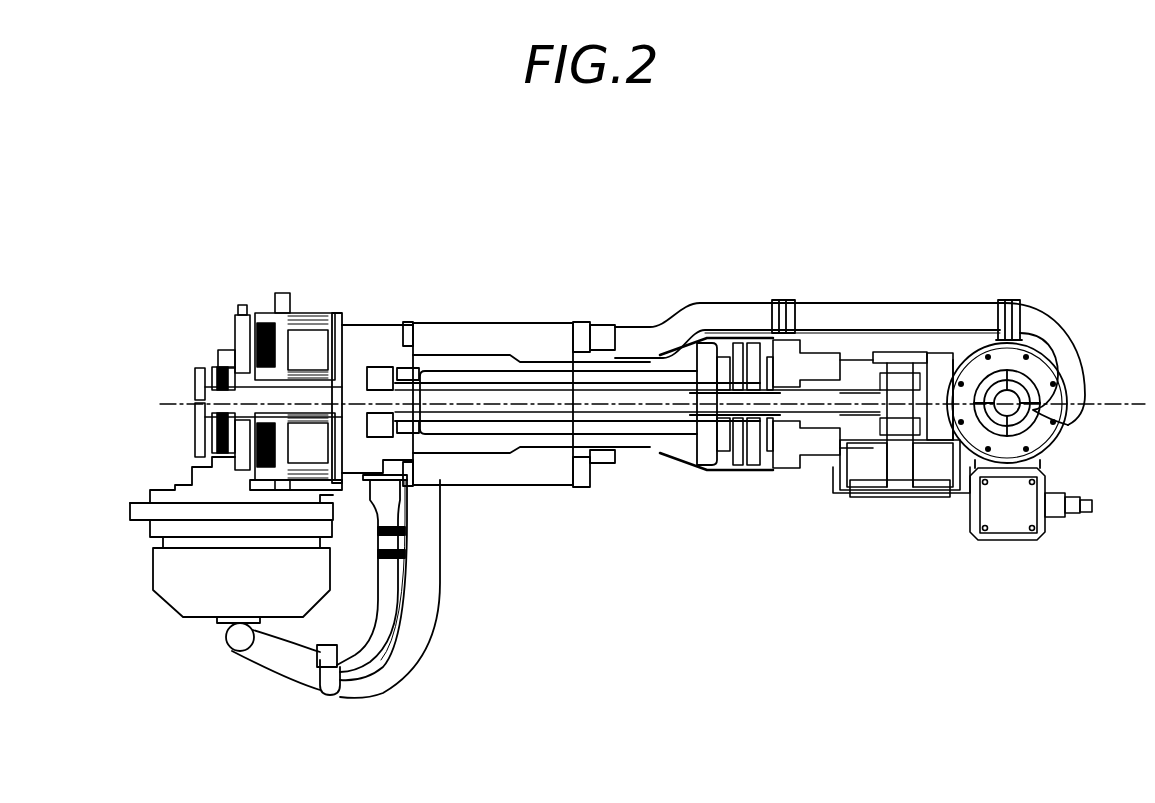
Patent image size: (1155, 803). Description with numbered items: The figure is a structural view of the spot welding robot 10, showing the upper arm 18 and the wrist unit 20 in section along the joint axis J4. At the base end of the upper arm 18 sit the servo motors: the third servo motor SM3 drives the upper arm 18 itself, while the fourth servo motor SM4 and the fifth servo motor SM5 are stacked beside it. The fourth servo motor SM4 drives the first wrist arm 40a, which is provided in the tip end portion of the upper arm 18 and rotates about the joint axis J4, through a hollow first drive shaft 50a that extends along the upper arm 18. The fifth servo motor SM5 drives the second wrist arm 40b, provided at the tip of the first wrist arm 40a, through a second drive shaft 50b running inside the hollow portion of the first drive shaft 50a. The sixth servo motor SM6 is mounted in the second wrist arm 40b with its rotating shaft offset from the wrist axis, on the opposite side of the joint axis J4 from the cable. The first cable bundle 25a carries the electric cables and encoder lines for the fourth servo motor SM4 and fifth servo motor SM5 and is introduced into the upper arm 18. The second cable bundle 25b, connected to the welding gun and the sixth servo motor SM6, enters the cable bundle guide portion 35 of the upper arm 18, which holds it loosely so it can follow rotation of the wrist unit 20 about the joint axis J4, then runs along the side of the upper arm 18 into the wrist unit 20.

The spot welding robot 10 is at (325, 190).
The joint axis J4 is at (160, 404).
The upper arm 18 is at (622, 450).
The wrist unit 20 is at (889, 518).
The first cable bundle 25a is at (372, 632).
The second cable bundle 25b is at (418, 578).
The cable bundle guide portion 35 is at (482, 322).
The first wrist arm 40a is at (845, 373).
The second wrist arm 40b is at (948, 363).
The first drive shaft 50a is at (660, 428).
The second drive shaft 50b is at (833, 418).
The third servo motor SM3 is at (196, 374).
The fourth servo motor SM4 is at (312, 350).
The fifth servo motor SM5 is at (238, 315).
The sixth servo motor SM6 is at (1010, 528).